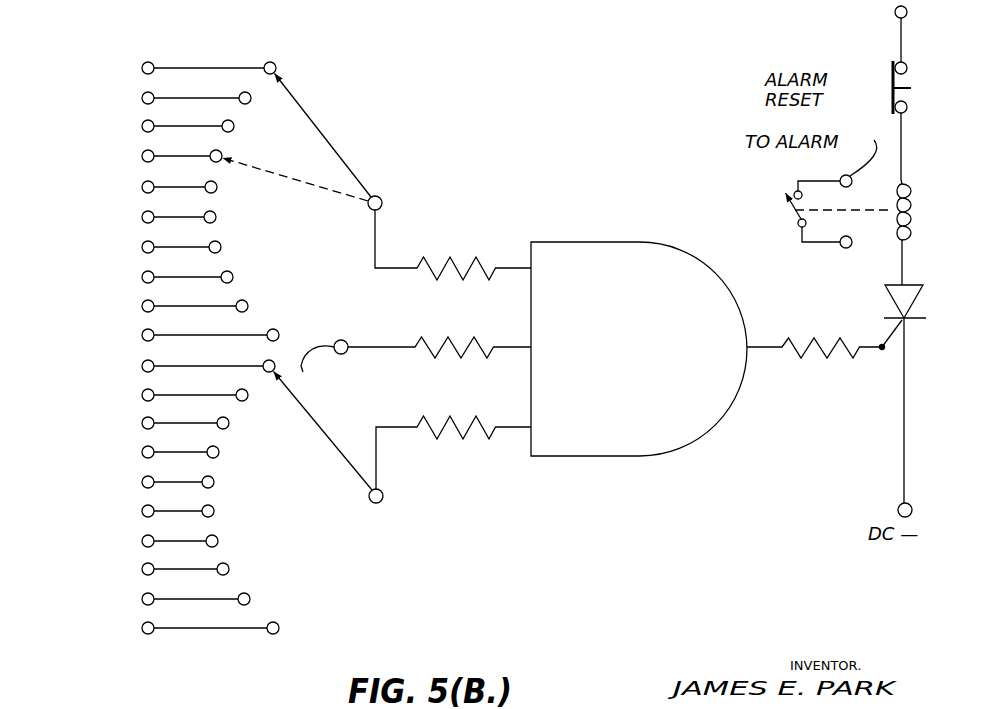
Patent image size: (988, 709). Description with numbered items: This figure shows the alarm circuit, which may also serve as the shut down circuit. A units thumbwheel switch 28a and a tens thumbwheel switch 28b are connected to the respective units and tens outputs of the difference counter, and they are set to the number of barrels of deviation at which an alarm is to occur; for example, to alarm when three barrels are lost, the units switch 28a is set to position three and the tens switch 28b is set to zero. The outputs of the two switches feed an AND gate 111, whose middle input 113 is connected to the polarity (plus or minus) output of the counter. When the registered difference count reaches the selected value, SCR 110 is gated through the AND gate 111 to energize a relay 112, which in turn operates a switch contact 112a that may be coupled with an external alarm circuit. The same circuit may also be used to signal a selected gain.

The units thumbwheel switch 28a is at (214, 202).
The tens thumbwheel switch 28b is at (219, 497).
The AND gate 111 is at (670, 243).
The middle input 113 is at (392, 345).
The relay 112 is at (908, 190).
The switch contact 112a is at (796, 208).
The SCR 110 is at (899, 284).